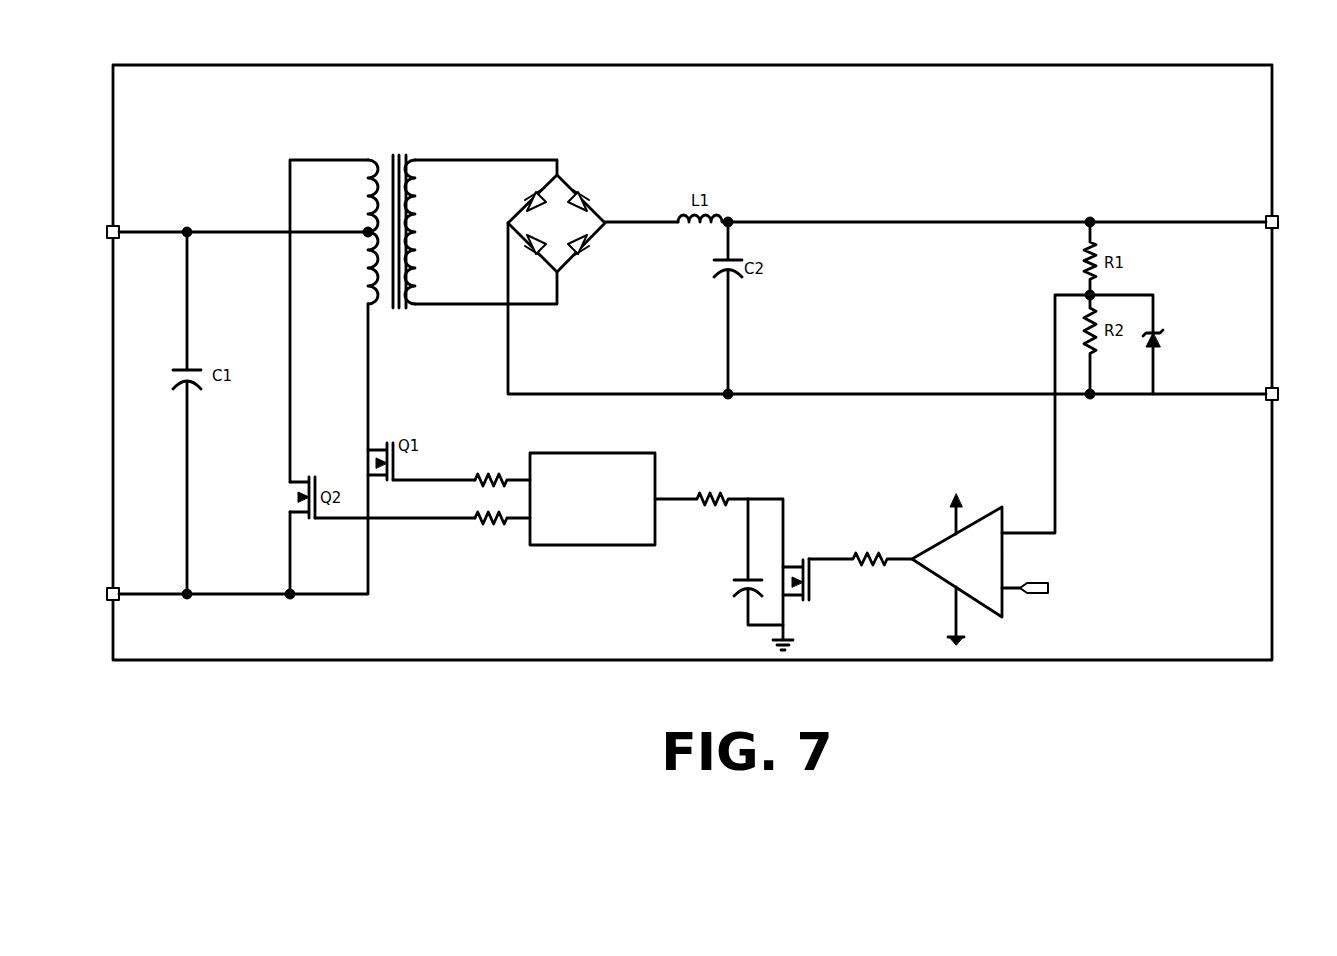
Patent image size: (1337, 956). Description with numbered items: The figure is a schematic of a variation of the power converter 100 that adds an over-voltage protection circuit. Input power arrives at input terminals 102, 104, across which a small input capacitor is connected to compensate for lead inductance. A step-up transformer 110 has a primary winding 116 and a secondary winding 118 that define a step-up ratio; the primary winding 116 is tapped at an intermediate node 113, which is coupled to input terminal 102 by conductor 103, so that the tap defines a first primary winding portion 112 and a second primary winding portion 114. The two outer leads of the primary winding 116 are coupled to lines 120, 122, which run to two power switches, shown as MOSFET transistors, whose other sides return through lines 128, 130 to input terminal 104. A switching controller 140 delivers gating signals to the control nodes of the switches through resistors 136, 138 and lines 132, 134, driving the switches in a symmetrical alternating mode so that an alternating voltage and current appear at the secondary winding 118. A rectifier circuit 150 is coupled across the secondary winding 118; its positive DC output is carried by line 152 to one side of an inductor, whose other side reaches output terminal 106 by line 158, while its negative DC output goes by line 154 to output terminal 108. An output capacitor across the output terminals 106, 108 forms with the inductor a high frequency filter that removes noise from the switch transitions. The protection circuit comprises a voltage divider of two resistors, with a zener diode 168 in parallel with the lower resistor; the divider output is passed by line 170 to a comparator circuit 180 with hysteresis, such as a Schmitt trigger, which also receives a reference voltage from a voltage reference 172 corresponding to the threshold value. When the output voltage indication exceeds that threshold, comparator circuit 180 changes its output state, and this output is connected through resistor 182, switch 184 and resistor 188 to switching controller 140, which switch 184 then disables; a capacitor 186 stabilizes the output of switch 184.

The power converter 100 is at (105, 74).
The input terminal 102 is at (110, 224).
The conductor 103 is at (238, 231).
The input terminal 104 is at (108, 602).
The output terminal 106 is at (1278, 220).
The output terminal 108 is at (1278, 392).
The step-up transformer 110 is at (422, 122).
The first primary winding portion 112 is at (357, 196).
The intermediate node 113 is at (364, 231).
The second primary winding portion 114 is at (357, 268).
The primary winding 116 is at (362, 146).
The secondary winding 118 is at (433, 140).
The line 120 is at (289, 342).
The line 122 is at (370, 352).
The second switch source line 128 is at (289, 536).
The first switch source line 130 is at (370, 556).
The line 132 is at (408, 480).
The line 134 is at (406, 518).
The resistor 136 is at (502, 470).
The resistor 138 is at (502, 508).
The switching controller 140 is at (570, 452).
The rectifier circuit 150 is at (569, 184).
The line 152 is at (621, 224).
The line 154 is at (603, 393).
The line 158 is at (1027, 221).
The zener diode 168 is at (1158, 334).
The feedback line 170 is at (1053, 350).
The voltage reference 172 is at (1042, 583).
The comparator circuit 180 is at (980, 513).
The resistor 182 is at (860, 548).
The switch 184 is at (813, 579).
The capacitor 186 is at (738, 562).
The resistor 188 is at (724, 562).